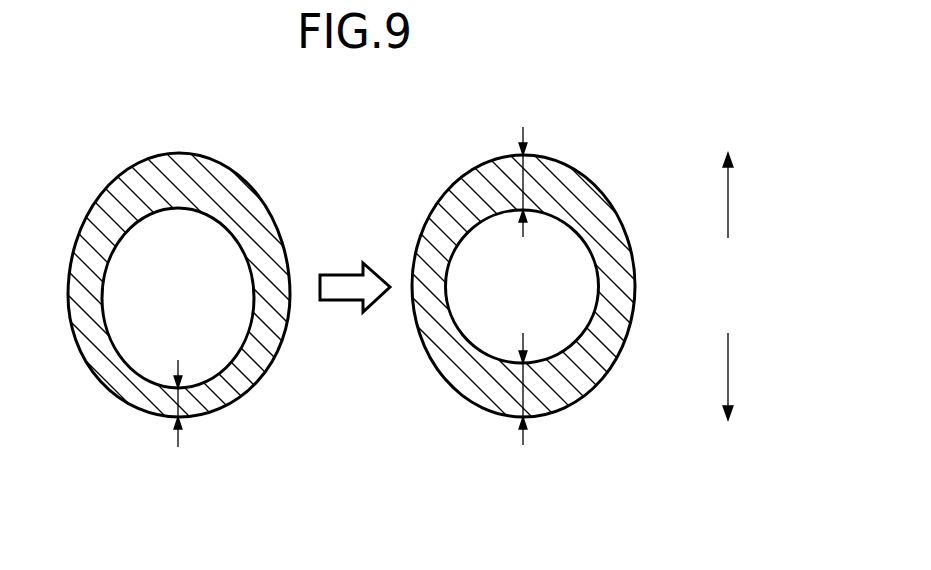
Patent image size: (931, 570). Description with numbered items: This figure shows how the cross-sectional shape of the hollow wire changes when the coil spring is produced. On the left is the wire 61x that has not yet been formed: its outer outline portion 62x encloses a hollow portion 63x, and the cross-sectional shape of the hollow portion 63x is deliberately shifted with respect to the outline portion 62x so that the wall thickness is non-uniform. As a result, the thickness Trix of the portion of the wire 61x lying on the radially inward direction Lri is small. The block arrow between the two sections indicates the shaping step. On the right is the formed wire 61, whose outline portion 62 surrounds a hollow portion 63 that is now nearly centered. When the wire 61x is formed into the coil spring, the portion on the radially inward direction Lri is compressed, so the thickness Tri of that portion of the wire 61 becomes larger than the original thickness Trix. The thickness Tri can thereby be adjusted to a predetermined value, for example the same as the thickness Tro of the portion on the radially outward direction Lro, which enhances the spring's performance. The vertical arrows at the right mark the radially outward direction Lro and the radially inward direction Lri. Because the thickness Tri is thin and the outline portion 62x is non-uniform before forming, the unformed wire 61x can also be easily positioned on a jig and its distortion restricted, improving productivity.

The wire 61x is at (152, 155).
The outline portion 62x is at (248, 200).
The hollow portion 63x is at (137, 245).
The thickness Trix is at (178, 398).
The wire 61 is at (497, 155).
The outline portion 62 is at (592, 202).
The hollow portion 63 is at (480, 243).
The thickness Tro is at (523, 182).
The thickness Tri is at (523, 388).
The radially outward direction Lro is at (728, 197).
The radially inward direction Lri is at (728, 377).